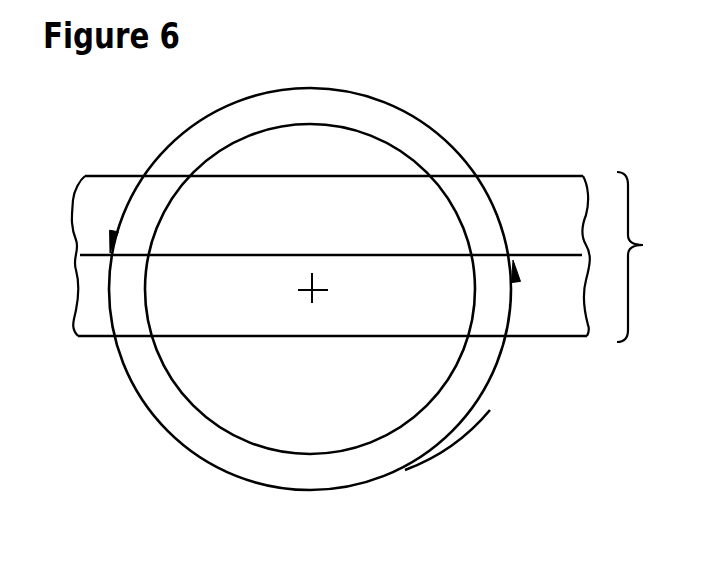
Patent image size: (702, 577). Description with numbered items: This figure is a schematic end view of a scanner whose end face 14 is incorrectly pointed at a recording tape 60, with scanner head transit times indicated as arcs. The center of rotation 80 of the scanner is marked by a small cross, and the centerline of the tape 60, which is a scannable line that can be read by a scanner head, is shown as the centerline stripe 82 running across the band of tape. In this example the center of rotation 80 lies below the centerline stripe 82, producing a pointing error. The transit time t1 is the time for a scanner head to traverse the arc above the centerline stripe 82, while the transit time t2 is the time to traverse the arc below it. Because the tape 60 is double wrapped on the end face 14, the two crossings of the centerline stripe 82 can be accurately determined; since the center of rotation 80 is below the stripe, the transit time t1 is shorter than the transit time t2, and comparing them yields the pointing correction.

The end face 14 is at (443, 393).
The tape 60 is at (93, 337).
The center of rotation 80 is at (315, 298).
The centerline stripe 82 is at (211, 255).
The transit time t1 is at (437, 132).
The transit time t2 is at (405, 470).